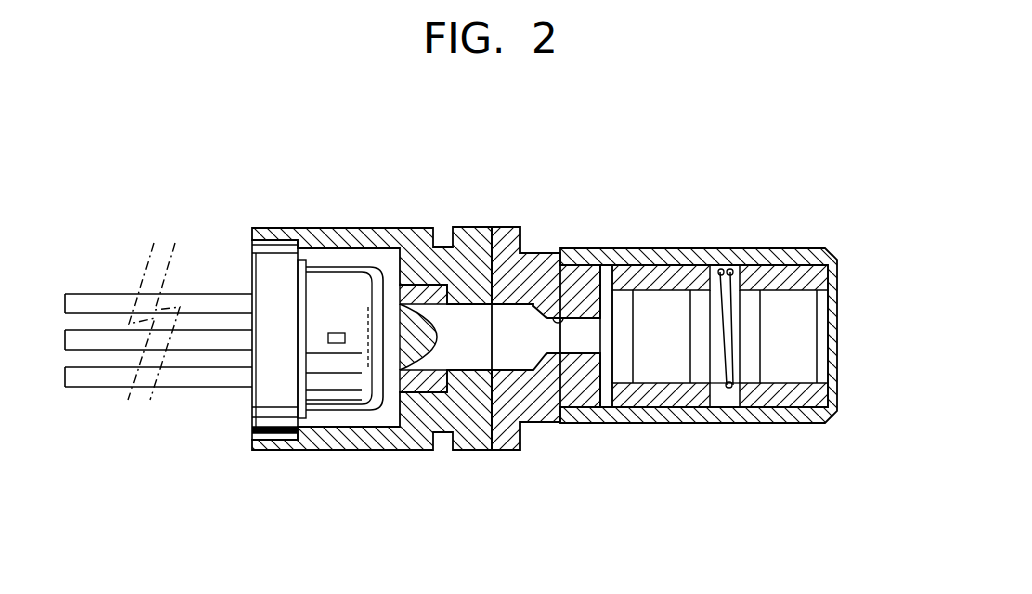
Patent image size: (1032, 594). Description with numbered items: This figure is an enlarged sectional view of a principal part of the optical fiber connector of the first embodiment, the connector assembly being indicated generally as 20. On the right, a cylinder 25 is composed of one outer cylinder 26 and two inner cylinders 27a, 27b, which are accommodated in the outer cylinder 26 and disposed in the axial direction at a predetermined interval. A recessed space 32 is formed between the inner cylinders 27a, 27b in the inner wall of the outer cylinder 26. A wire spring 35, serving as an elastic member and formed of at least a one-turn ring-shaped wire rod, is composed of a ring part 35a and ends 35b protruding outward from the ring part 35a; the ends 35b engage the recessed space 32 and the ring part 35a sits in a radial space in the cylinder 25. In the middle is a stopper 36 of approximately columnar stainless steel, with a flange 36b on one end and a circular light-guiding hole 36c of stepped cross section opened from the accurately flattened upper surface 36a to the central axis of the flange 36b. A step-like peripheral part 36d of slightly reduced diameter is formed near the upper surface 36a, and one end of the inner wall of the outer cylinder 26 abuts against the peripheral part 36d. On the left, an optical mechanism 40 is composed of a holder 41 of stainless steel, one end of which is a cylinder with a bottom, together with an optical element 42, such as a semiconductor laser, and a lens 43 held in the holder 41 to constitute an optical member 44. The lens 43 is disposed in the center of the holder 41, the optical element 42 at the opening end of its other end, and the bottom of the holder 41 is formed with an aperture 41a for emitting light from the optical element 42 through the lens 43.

The pressure sensor 20 is at (500, 188).
The cylinder 25 is at (843, 141).
The outer cylinder 26 is at (774, 250).
The inner cylinder 27a is at (797, 278).
The inner cylinder 27b is at (672, 278).
The recessed space 32 is at (726, 405).
The wire spring 35 is at (733, 320).
The ring part 35a is at (733, 347).
The ends 35b is at (722, 270).
The stopper 36 is at (545, 423).
The upper surface 36a is at (603, 375).
The flange 36b is at (492, 432).
The light-guiding hole 36c is at (559, 316).
The peripheral part 36d is at (604, 264).
The optical mechanism 40 is at (325, 454).
The holder 41 is at (385, 443).
The aperture 41a is at (467, 310).
The optical element 42 is at (325, 285).
The lens 43 is at (417, 327).
The optical member 44 is at (288, 143).